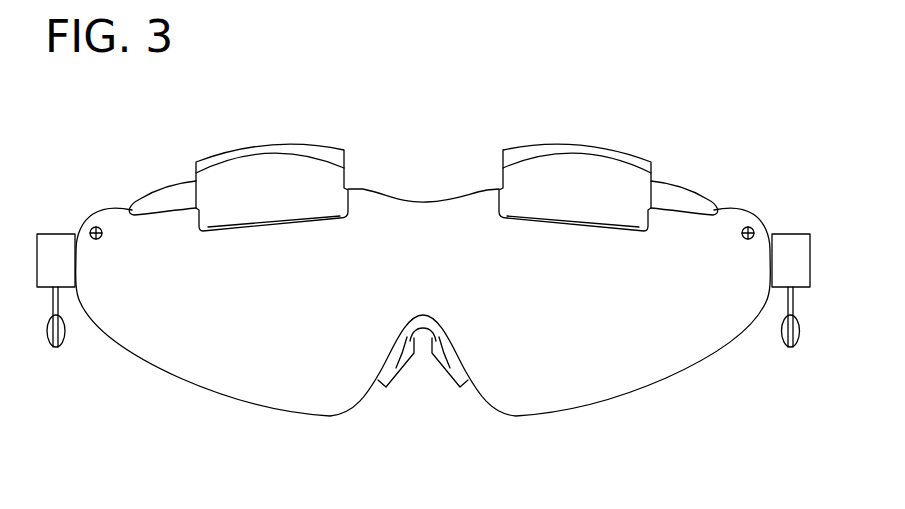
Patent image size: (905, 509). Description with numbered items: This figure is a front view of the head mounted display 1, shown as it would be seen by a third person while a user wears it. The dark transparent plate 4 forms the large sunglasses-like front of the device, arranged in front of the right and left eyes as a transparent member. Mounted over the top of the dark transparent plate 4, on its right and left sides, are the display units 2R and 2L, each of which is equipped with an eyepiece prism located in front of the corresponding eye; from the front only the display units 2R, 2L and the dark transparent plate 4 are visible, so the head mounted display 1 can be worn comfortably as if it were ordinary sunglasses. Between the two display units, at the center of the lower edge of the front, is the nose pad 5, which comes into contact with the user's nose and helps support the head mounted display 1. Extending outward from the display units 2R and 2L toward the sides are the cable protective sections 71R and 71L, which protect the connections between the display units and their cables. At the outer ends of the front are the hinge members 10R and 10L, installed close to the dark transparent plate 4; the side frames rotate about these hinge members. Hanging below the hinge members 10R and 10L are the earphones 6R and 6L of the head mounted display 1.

The head mounted display 1 is at (458, 101).
The display unit 2R is at (270, 164).
The display unit 2L is at (568, 156).
The dark transparent plate 4 is at (530, 404).
The nose pad 5 is at (408, 372).
The earphone 6R is at (58, 350).
The earphone 6L is at (790, 349).
The hinge member 10R is at (53, 240).
The hinge member 10L is at (793, 240).
The cable protective section 71R is at (160, 197).
The cable protective section 71L is at (684, 188).